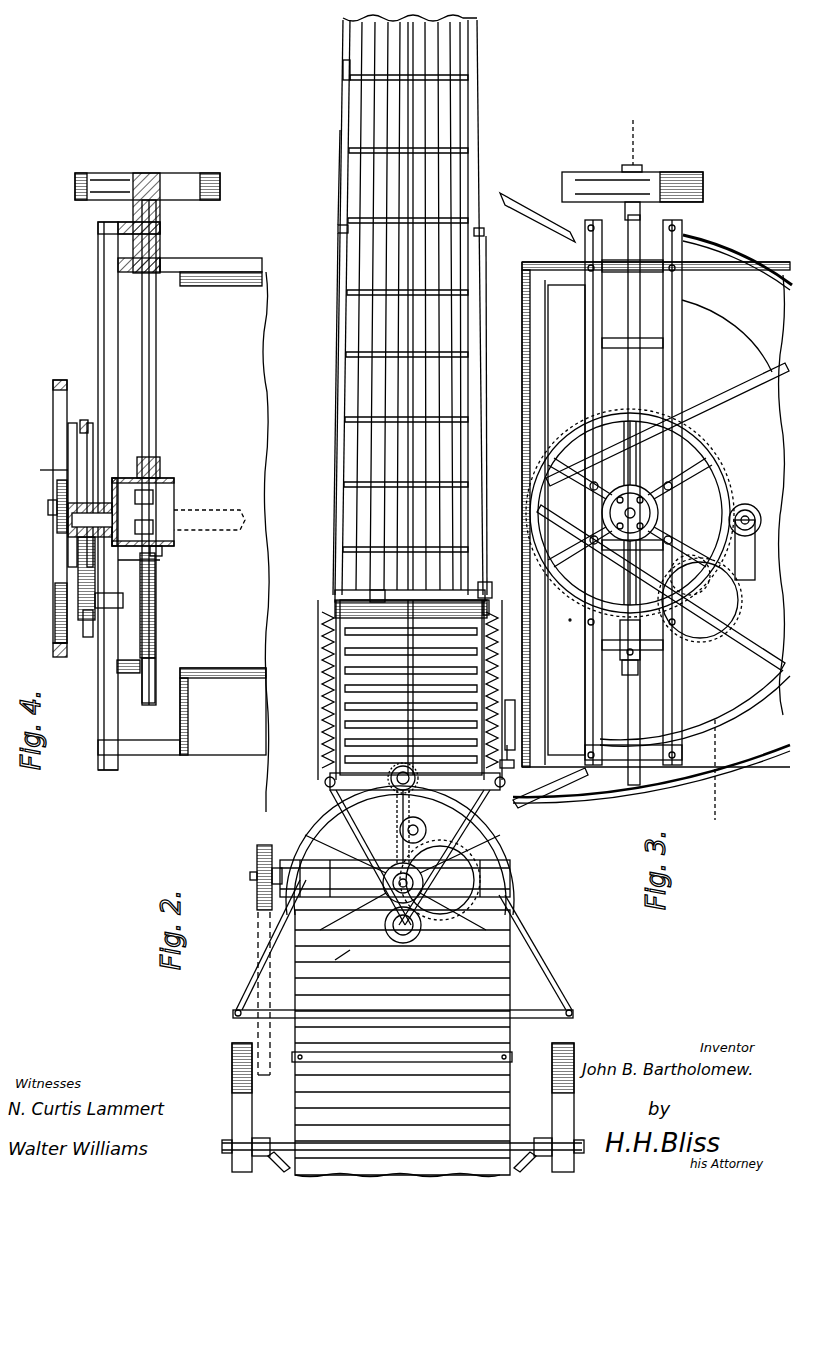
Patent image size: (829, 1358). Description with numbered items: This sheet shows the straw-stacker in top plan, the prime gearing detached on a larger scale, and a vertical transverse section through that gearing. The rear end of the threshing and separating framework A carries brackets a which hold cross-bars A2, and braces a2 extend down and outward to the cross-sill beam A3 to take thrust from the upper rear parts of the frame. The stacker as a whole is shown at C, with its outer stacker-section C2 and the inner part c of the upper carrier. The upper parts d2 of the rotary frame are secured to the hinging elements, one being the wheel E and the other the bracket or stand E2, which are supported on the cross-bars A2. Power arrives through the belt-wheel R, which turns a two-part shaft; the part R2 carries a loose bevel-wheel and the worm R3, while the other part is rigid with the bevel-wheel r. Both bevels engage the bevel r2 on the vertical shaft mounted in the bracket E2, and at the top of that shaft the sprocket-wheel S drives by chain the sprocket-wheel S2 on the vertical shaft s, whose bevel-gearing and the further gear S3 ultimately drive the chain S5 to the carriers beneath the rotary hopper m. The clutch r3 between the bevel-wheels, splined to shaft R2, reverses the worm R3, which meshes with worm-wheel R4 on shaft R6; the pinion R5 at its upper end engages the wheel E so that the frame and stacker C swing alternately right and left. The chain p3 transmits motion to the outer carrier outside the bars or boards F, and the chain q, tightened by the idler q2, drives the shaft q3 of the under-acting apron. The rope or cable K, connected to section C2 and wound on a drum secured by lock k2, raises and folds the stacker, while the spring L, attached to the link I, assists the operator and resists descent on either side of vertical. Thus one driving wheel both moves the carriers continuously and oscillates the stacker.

In FIG. 2, the threshing and separating mechanism frame A is at (403, 1043).
In FIG. 4, the cross-bars A2 is at (108, 770).
In FIG. 2, the cross-bars A2 is at (310, 822).
In FIG. 3, the cross-bars A2 is at (622, 180).
In FIG. 2, the cross-sill beam A3 is at (578, 1030).
In FIG. 4, the brackets a is at (128, 265).
In FIG. 2, the brackets a is at (330, 862).
In FIG. 3, the brackets a is at (530, 850).
In FIG. 4, the braces a2 is at (160, 230).
In FIG. 2, the braces a2 is at (255, 975).
In FIG. 3, the braces a2 is at (530, 205).
In FIG. 2, the stacker / main delivery-carriers C is at (384, 313).
In FIG. 2, the outer stacker-section C2 is at (336, 230).
In FIG. 4, the inner part of outer carrier c is at (118, 440).
In FIG. 2, the inner part of outer carrier c is at (360, 385).
In FIG. 4, the upper parts of rotary frame d2 is at (47, 513).
In FIG. 2, the upper parts of rotary frame d2 is at (383, 765).
In FIG. 3, the upper parts of rotary frame d2 is at (663, 484).
In FIG. 4, the wheel E is at (82, 430).
In FIG. 2, the wheel E is at (403, 926).
In FIG. 3, the wheel E is at (575, 445).
In FIG. 4, the bracket or stand E2 is at (209, 525).
In FIG. 4, the pin e is at (149, 562).
In FIG. 2, the pin e is at (392, 905).
In FIG. 3, the pin e is at (695, 540).
In FIG. 2, the bars or boards F is at (405, 687).
In FIG. 2, the link I is at (405, 690).
In FIG. 2, the rope or cable K is at (405, 690).
In FIG. 2, the lock k2 is at (512, 760).
In FIG. 3, the lock k2 is at (514, 740).
In FIG. 2, the spring L is at (405, 690).
In FIG. 4, the rotary hopper m is at (210, 290).
In FIG. 2, the rotary hopper m is at (325, 790).
In FIG. 3, the rotary hopper m is at (652, 527).
In FIG. 2, the chain p3 is at (496, 581).
In FIG. 2, the chain q is at (330, 597).
In FIG. 2, the tightening-idler q2 is at (345, 72).
In FIG. 2, the shaft q3 is at (375, 600).
In FIG. 4, the belt-wheel R is at (147, 173).
In FIG. 2, the belt-wheel R is at (250, 838).
In FIG. 3, the belt-wheel R is at (632, 184).
In FIG. 4, the shaft part R2 is at (150, 680).
In FIG. 4, the worm R3 is at (155, 600).
In FIG. 4, the worm-wheel R4 is at (155, 655).
In FIG. 3, the worm-wheel R4 is at (632, 690).
In FIG. 4, the pinion R5 is at (88, 637).
In FIG. 4, the shaft R6 is at (105, 582).
In FIG. 4, the bevel-wheel r is at (143, 501).
In FIG. 4, the bevel r2 is at (99, 509).
In FIG. 4, the clutch r3 is at (162, 512).
In FIG. 4, the sprocket-wheel S is at (57, 520).
In FIG. 2, the sprocket-wheel S is at (420, 920).
In FIG. 3, the sprocket-wheel S is at (580, 595).
In FIG. 2, the sprocket-wheel S2 is at (386, 771).
In FIG. 2, the gear S3 is at (445, 780).
In FIG. 2, the chain S5 is at (499, 941).
In FIG. 2, the vertical shaft s is at (397, 815).